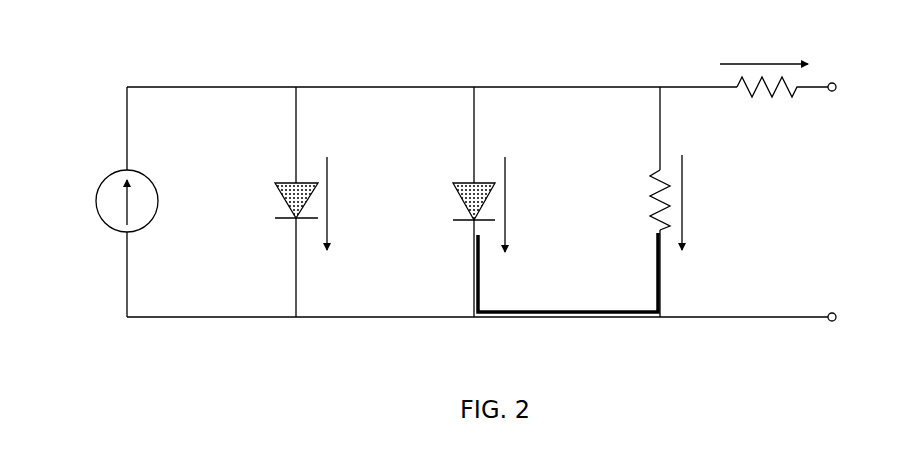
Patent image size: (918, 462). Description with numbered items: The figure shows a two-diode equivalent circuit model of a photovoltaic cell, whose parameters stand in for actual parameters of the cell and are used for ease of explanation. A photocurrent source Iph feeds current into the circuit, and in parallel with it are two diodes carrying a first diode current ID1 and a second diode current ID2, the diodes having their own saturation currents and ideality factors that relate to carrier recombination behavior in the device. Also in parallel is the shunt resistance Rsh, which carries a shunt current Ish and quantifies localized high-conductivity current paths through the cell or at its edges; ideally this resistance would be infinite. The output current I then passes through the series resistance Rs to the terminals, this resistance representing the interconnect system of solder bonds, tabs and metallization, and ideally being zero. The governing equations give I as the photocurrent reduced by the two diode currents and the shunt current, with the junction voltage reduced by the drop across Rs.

The photocurrent source Iph is at (105, 201).
The first diode current ID1 is at (279, 203).
The second diode current ID2 is at (457, 204).
The shunt resistance Rsh is at (634, 200).
The shunt current Ish is at (709, 202).
The series resistance Rs is at (782, 116).
The output current I is at (764, 48).